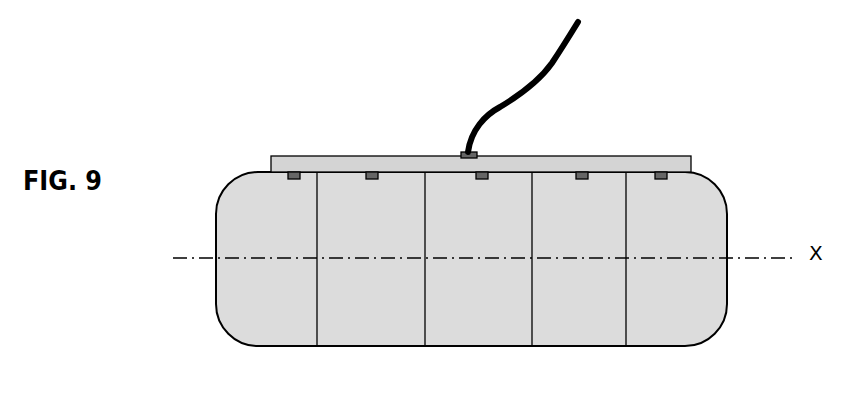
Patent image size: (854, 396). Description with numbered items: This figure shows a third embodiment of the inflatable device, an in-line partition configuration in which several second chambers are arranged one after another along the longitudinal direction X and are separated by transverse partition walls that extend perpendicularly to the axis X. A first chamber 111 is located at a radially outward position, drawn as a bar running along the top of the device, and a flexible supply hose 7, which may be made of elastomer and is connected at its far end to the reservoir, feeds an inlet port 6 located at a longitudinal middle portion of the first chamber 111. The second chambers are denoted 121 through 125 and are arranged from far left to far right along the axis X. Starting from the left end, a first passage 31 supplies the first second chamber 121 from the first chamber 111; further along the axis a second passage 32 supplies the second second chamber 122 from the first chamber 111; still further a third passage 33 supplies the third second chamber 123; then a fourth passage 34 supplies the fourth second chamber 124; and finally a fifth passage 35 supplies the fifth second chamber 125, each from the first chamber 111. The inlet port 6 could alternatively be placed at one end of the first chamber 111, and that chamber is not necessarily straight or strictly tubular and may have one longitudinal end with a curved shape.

The inlet port 6 is at (463, 152).
The supply hose 7 is at (548, 63).
The first passage 31 is at (295, 172).
The second passage 32 is at (374, 172).
The third passage 33 is at (483, 172).
The fourth passage 34 is at (582, 172).
The fifth passage 35 is at (662, 172).
The first chamber 111 is at (432, 156).
The first second chamber 121 is at (288, 240).
The second second chamber 122 is at (390, 240).
The third second chamber 123 is at (496, 240).
The fourth second chamber 124 is at (598, 240).
The fifth second chamber 125 is at (660, 240).